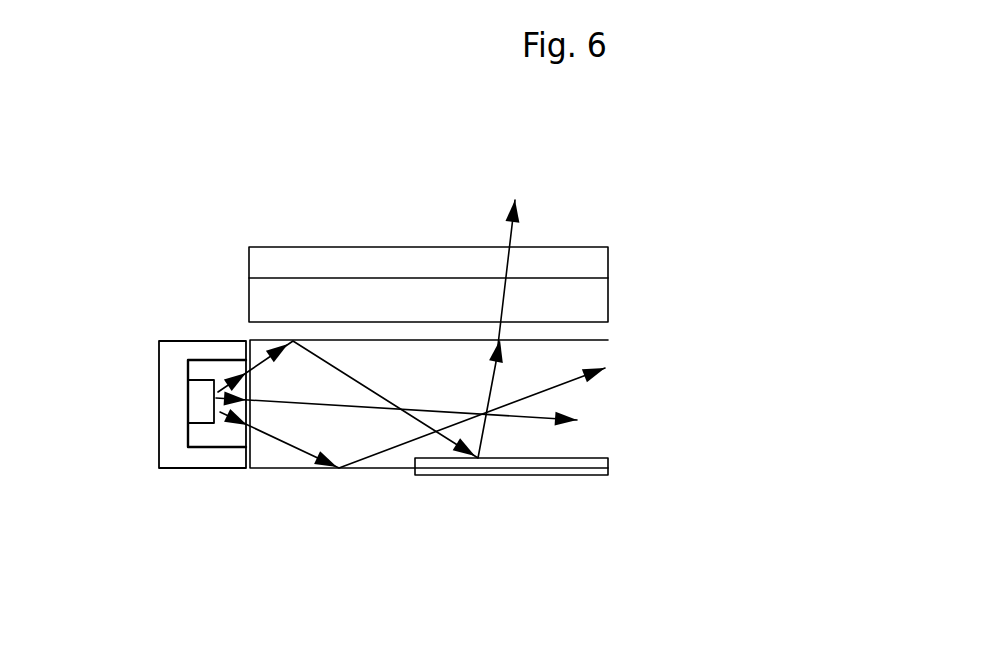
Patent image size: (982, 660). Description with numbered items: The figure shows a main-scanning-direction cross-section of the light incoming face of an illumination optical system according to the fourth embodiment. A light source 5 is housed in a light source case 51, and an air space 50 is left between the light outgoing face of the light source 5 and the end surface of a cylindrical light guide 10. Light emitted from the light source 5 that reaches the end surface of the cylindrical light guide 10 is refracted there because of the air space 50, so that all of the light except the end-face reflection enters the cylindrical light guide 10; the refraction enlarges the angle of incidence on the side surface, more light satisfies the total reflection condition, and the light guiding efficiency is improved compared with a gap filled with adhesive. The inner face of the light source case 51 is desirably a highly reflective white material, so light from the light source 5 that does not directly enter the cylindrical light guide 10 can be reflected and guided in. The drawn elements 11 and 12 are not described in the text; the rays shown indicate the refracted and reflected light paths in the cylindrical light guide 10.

The light source 5 is at (195, 403).
The cylindrical light guide 10 is at (278, 463).
The reflective sheet 11 is at (470, 478).
The liquid crystal display panel 12 is at (262, 265).
The air space 50 is at (187, 447).
The light source case 51 is at (215, 470).